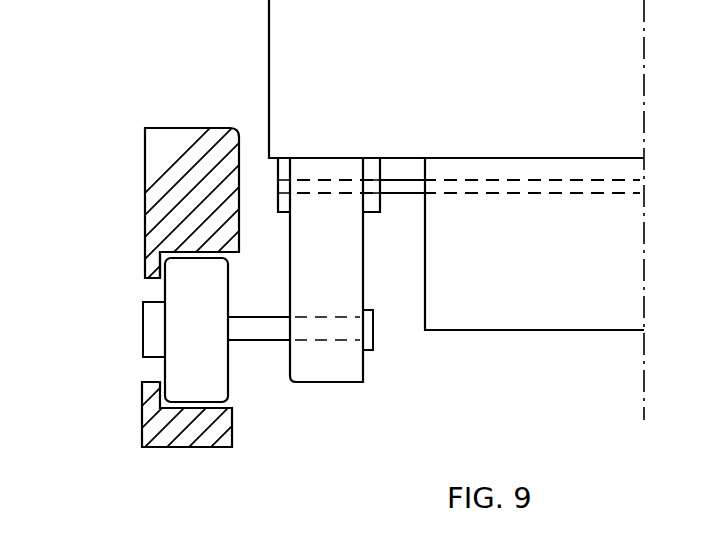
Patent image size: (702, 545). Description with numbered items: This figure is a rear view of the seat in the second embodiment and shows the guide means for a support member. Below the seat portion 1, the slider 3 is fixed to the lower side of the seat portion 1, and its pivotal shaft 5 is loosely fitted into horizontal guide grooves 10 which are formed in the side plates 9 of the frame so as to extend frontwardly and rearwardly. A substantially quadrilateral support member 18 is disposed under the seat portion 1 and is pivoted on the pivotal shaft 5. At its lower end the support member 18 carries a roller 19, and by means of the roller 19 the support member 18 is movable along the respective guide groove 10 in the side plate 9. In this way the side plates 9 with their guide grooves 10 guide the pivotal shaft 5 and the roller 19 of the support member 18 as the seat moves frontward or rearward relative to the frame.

The seat portion 1 is at (305, 80).
The slider 3 is at (545, 288).
The pivotal shaft 5 is at (393, 188).
The side plate 9 is at (162, 143).
The guide groove 10 is at (207, 258).
The support member 18 is at (322, 368).
The roller 19 is at (190, 362).